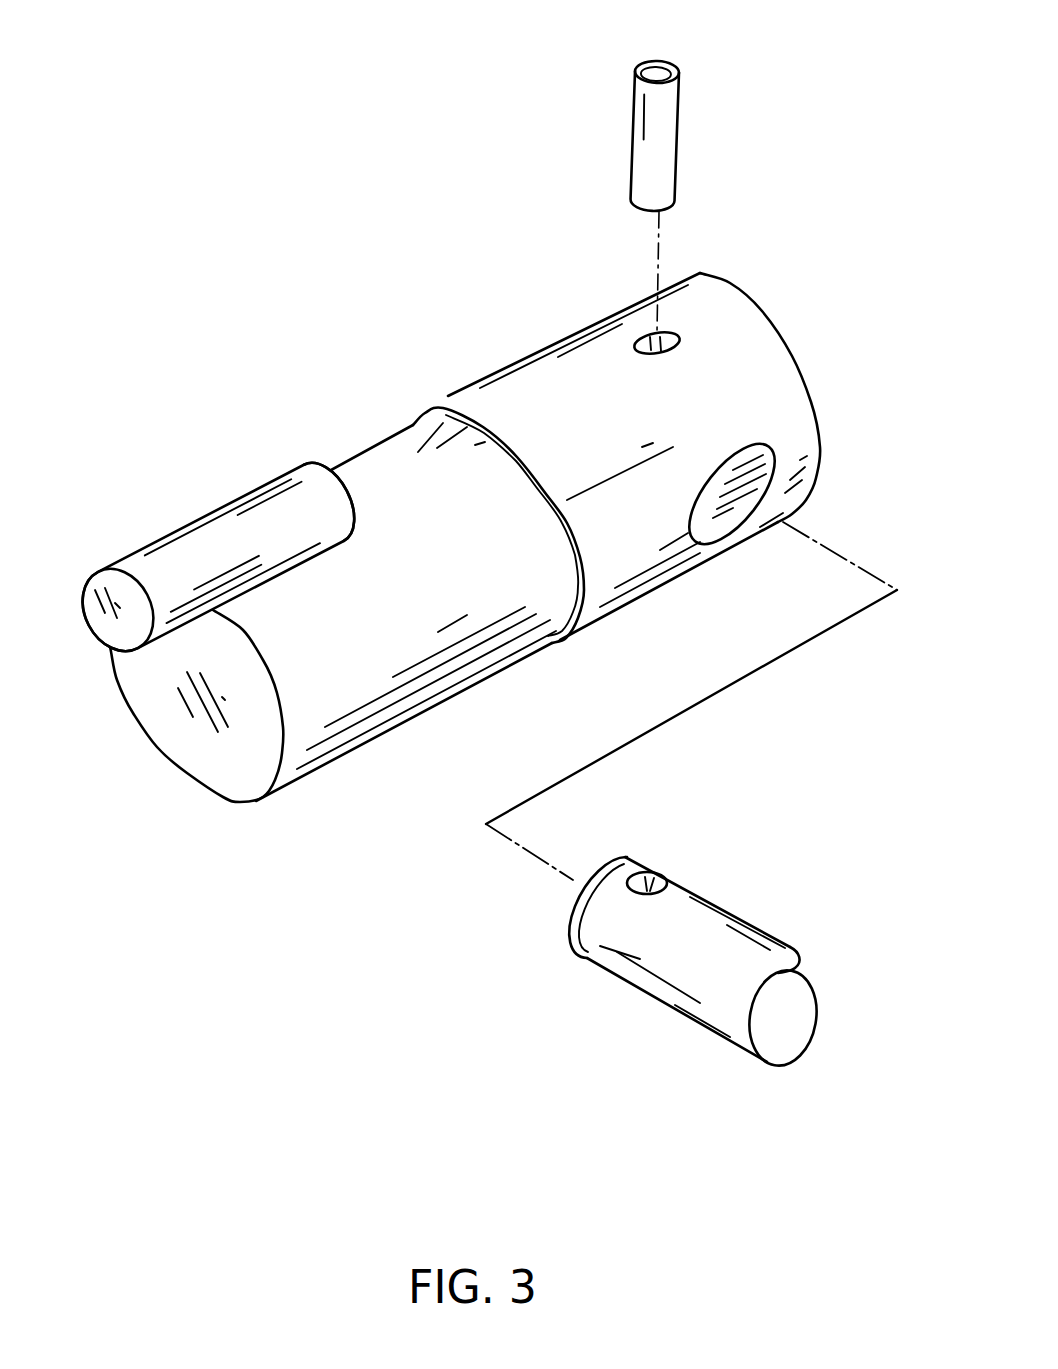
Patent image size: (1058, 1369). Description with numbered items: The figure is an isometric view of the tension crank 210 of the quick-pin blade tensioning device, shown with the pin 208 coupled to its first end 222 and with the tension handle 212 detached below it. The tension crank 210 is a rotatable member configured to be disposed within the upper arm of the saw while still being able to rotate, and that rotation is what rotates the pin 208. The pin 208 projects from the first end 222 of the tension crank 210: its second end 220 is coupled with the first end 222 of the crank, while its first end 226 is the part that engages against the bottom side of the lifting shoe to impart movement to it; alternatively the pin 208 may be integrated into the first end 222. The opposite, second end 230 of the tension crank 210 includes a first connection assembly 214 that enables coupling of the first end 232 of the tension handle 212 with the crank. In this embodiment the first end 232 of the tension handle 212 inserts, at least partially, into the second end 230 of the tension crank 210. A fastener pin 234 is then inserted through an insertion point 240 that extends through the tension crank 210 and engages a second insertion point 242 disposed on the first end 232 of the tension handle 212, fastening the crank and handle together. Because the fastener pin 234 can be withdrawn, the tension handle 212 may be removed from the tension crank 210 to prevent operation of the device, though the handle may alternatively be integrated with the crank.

The pin 208 is at (210, 512).
The tension crank 210 is at (468, 385).
The tension handle 212 is at (790, 937).
The first connection assembly 214 is at (733, 467).
The second end of the pin 220 is at (283, 493).
The first end of the tension crank 222 is at (308, 757).
The first end of the pin 226 is at (140, 567).
The second end of the tension crank 230 is at (748, 352).
The first end of the tension handle 232 is at (637, 957).
The fastener pin 234 is at (663, 107).
The insertion point 240 is at (668, 333).
The second insertion point 242 is at (663, 872).